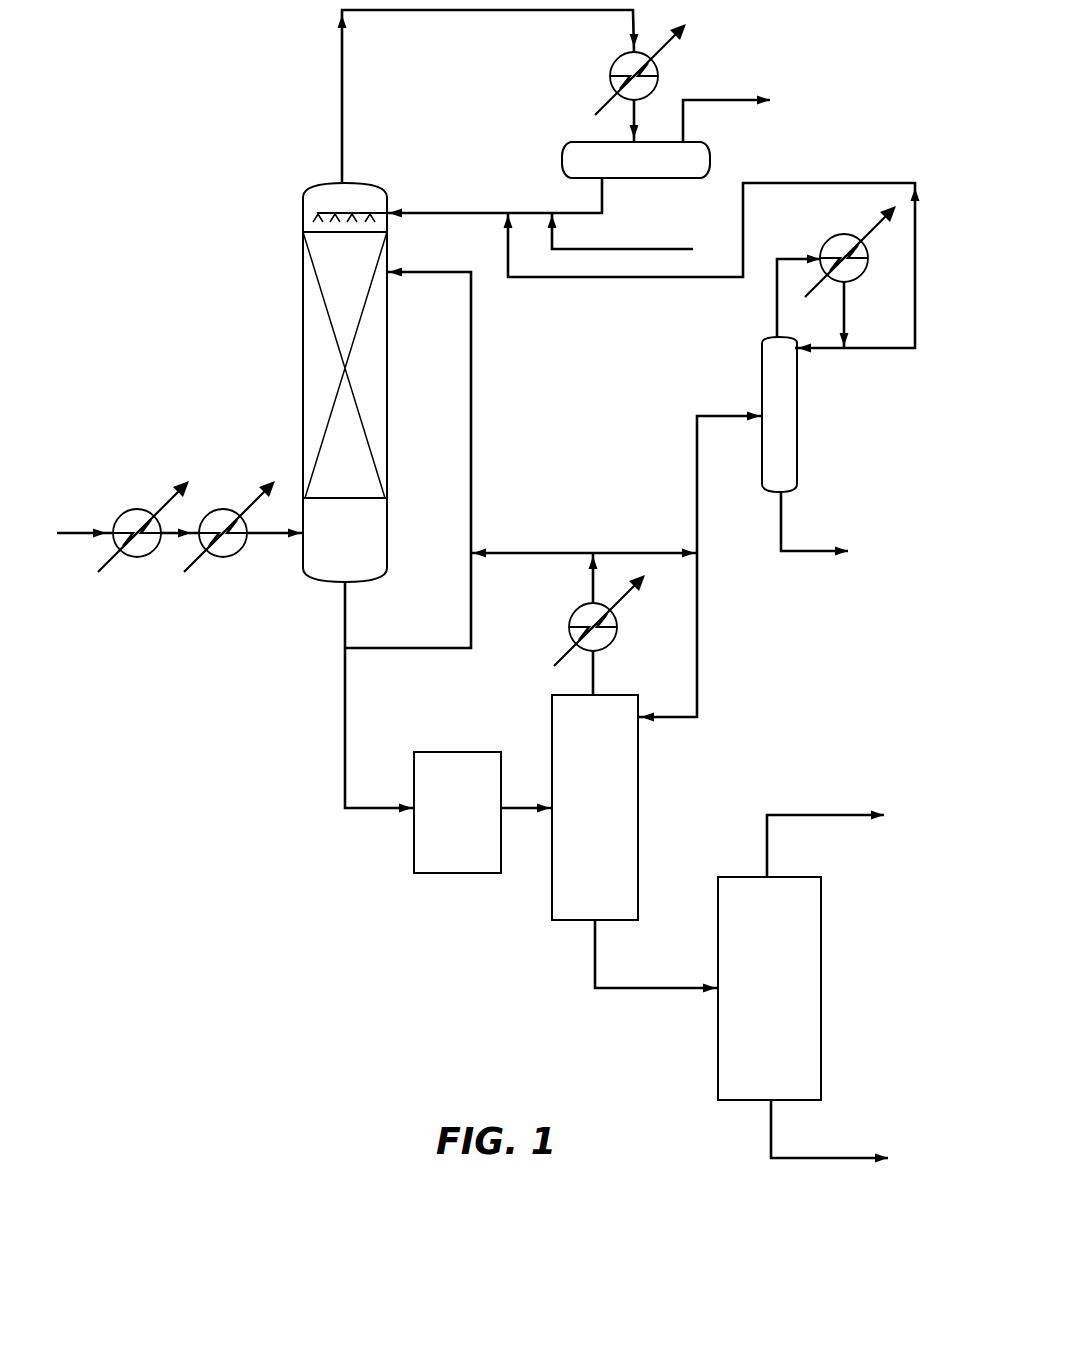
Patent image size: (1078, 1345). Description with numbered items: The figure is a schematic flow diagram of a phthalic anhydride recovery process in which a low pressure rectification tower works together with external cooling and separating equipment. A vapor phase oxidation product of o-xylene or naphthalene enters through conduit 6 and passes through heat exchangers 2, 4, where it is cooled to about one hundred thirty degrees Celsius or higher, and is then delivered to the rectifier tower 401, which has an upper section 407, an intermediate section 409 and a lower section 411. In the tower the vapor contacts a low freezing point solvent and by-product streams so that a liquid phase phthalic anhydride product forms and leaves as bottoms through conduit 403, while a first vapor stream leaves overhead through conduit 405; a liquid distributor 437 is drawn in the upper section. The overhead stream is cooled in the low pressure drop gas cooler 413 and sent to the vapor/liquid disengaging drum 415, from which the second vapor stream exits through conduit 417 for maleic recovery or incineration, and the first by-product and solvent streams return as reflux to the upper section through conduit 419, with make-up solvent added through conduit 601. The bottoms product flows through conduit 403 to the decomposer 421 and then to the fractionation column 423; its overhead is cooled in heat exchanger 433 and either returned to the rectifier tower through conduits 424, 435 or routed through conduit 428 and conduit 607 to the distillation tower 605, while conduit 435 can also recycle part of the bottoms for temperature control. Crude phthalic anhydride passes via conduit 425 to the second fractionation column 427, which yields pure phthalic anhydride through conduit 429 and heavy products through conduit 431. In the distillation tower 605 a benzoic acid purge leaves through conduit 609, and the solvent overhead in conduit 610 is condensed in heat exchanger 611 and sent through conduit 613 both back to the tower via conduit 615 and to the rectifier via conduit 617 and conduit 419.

The heat exchanger 2 is at (130, 509).
The heat exchanger 4 is at (217, 509).
The conduit 6 is at (72, 533).
The rectifier tower 401 is at (303, 311).
The conduit 403 is at (345, 612).
The conduit 405 is at (342, 91).
The upper section 407 is at (292, 198).
The intermediate section 409 is at (360, 264).
The lower section 411 is at (399, 497).
The low pressure drop gas cooler 413 is at (618, 58).
The vapor/liquid disengaging drum 415 is at (588, 142).
The conduit 417 is at (703, 100).
The conduit 419 is at (430, 213).
The decomposer 421 is at (450, 752).
The fractionation column 423 is at (617, 695).
The conduit 424 is at (568, 553).
The conduit 425 is at (595, 960).
The second fractionation column 427 is at (743, 877).
The conduit 428 is at (637, 553).
The conduit 429 is at (814, 815).
The conduit 431 is at (826, 1160).
The heat exchanger 433 is at (570, 620).
The conduit 435 is at (471, 352).
The liquid distributor 437 is at (385, 218).
The conduit 601 is at (645, 249).
The distillation tower 605 is at (762, 363).
The conduit 607 is at (697, 432).
The conduit 609 is at (781, 517).
The conduit 610 is at (777, 305).
The heat exchanger 611 is at (844, 234).
The conduit 613 is at (844, 318).
The conduit 615 is at (830, 348).
The conduit 617 is at (893, 348).